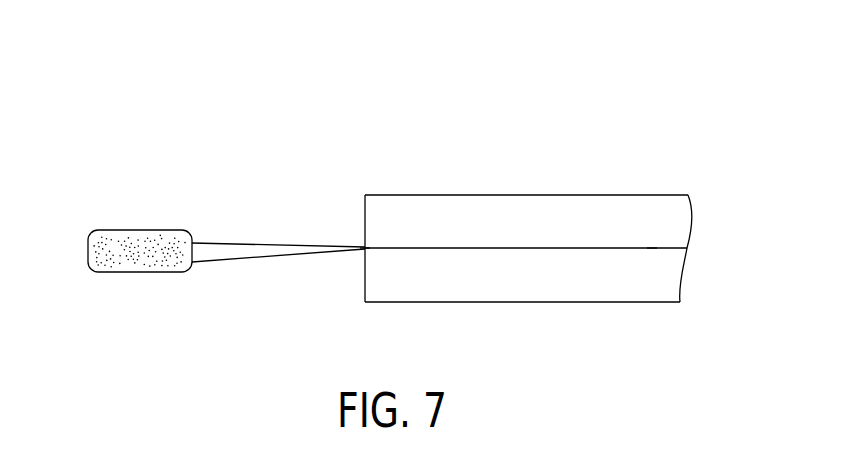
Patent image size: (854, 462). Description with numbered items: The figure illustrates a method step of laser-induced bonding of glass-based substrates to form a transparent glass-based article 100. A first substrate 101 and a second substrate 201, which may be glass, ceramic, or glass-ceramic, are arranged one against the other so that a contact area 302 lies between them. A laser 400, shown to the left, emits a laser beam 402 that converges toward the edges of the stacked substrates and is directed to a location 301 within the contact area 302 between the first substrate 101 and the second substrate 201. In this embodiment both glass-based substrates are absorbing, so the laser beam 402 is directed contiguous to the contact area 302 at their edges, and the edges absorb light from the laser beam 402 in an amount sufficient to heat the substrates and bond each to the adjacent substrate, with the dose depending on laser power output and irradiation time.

The transparent glass-based article 100 is at (284, 134).
The laser 400 is at (152, 230).
The laser beam 402 is at (222, 252).
The location 301 is at (365, 247).
The second substrate 201 is at (467, 210).
The first substrate 101 is at (457, 290).
The contact area 302 is at (647, 248).